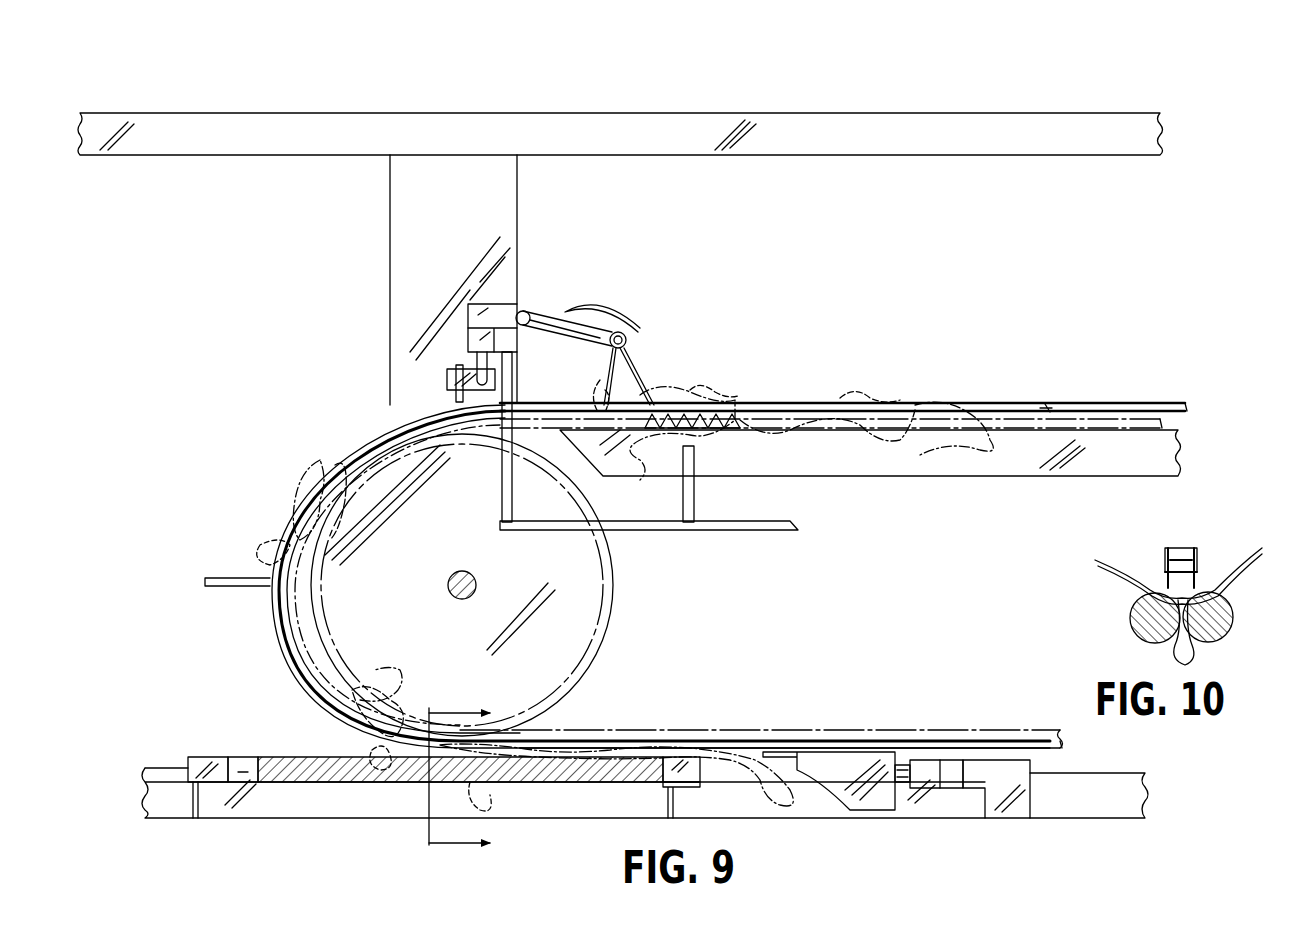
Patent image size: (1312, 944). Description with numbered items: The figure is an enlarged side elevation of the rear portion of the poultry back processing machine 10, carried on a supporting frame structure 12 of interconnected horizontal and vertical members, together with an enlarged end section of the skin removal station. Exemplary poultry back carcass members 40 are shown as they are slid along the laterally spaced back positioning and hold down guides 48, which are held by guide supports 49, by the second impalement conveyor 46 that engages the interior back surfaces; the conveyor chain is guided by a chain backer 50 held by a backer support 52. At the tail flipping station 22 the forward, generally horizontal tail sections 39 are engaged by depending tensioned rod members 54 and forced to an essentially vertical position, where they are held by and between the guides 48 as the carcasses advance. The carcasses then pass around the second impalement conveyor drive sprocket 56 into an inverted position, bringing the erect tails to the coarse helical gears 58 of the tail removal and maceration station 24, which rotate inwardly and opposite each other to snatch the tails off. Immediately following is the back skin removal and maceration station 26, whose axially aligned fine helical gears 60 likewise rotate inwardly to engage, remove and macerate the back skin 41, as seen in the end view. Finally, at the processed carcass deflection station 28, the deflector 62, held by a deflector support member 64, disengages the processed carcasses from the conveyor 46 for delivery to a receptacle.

In FIG. 9, the supporting frame structure 12 is at (813, 68).
In FIG. 9, the tail flipping station 22 is at (650, 280).
In FIG. 9, the guide supports 49 is at (468, 340).
In FIG. 9, the depending tensioned rod members 54 is at (630, 350).
In FIG. 9, the tail sections 39 is at (607, 378).
In FIG. 9, the poultry back carcass members 40 is at (780, 400).
In FIG. 10, the poultry back carcass members 40 is at (1262, 551).
In FIG. 9, the second impalement conveyor 46 is at (735, 410).
In FIG. 10, the second impalement conveyor 46 is at (1188, 555).
In FIG. 9, the back positioning and hold down guides 48 is at (1120, 402).
In FIG. 9, the chain backer 50 is at (893, 478).
In FIG. 9, the backer support 52 is at (752, 531).
In FIG. 9, the second impalement conveyor drive sprocket 56 is at (620, 593).
In FIG. 9, the poultry back processing machine 10 is at (444, 775).
In FIG. 9, the back skin removal and maceration station 26 is at (596, 712).
In FIG. 9, the processed carcass deflection station 28 is at (797, 715).
In FIG. 9, the deflector support member 64 is at (1040, 762).
In FIG. 9, the deflector 62 is at (873, 810).
In FIG. 9, the fine helical gears 60 is at (605, 783).
In FIG. 10, the fine helical gears 60 is at (1128, 613).
In FIG. 9, the coarse helical gears 58 is at (400, 782).
In FIG. 9, the back skin 41 is at (490, 810).
In FIG. 10, the back skin 41 is at (1200, 663).
In FIG. 9, the tail removal and maceration station 24 is at (352, 828).